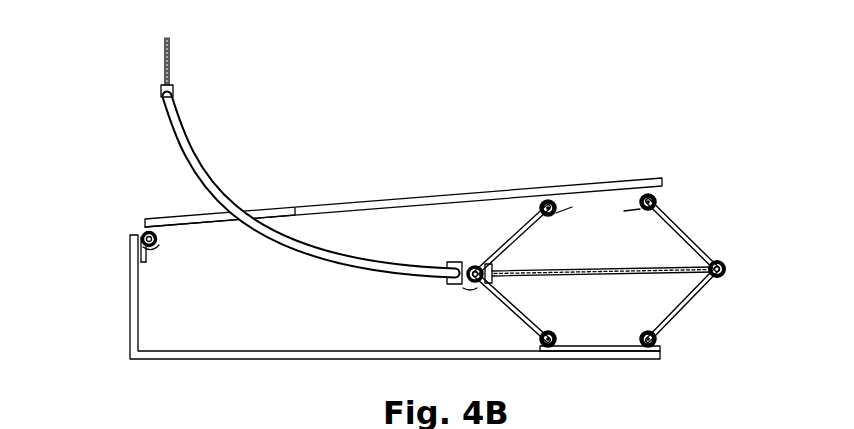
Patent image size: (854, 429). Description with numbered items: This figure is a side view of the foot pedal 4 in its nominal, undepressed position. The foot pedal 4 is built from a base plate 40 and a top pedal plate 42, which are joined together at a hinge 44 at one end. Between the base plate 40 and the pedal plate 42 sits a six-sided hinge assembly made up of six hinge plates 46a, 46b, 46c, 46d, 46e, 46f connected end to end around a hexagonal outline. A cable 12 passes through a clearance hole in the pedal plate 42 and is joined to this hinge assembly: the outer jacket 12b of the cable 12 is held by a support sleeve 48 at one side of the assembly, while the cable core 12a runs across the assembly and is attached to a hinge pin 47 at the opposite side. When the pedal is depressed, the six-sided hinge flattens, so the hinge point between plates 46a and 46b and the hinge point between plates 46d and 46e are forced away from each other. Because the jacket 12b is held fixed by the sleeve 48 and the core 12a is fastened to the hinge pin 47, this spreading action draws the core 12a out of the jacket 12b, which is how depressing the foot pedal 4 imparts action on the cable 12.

The foot pedal 4 is at (673, 129).
The cable 12 is at (152, 98).
The cable core 12a is at (171, 63).
The outer jacket 12b is at (174, 102).
The base plate 40 is at (310, 358).
The top pedal plate 42 is at (500, 193).
The hinge 44 is at (142, 236).
The hinge plate 46a is at (685, 222).
The hinge plate 46b is at (697, 306).
The hinge plate 46c is at (579, 346).
The hinge plate 46d is at (513, 318).
The hinge plate 46e is at (490, 249).
The hinge plate 46f is at (575, 199).
The hinge pin 47 is at (726, 265).
The support sleeve 48 is at (448, 284).